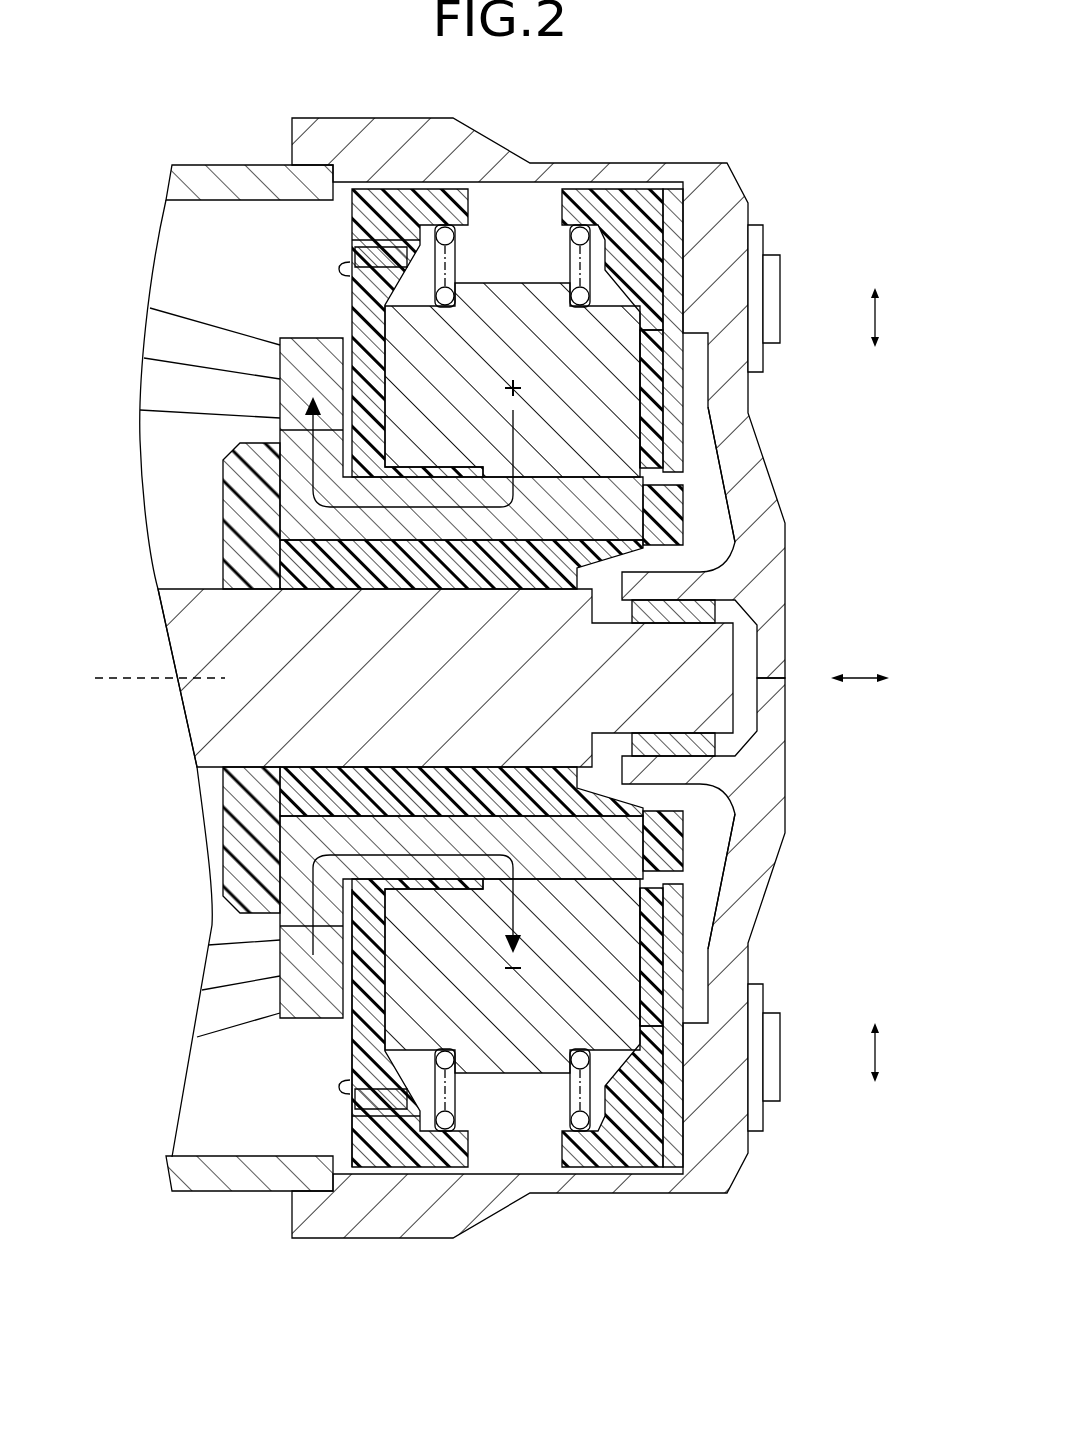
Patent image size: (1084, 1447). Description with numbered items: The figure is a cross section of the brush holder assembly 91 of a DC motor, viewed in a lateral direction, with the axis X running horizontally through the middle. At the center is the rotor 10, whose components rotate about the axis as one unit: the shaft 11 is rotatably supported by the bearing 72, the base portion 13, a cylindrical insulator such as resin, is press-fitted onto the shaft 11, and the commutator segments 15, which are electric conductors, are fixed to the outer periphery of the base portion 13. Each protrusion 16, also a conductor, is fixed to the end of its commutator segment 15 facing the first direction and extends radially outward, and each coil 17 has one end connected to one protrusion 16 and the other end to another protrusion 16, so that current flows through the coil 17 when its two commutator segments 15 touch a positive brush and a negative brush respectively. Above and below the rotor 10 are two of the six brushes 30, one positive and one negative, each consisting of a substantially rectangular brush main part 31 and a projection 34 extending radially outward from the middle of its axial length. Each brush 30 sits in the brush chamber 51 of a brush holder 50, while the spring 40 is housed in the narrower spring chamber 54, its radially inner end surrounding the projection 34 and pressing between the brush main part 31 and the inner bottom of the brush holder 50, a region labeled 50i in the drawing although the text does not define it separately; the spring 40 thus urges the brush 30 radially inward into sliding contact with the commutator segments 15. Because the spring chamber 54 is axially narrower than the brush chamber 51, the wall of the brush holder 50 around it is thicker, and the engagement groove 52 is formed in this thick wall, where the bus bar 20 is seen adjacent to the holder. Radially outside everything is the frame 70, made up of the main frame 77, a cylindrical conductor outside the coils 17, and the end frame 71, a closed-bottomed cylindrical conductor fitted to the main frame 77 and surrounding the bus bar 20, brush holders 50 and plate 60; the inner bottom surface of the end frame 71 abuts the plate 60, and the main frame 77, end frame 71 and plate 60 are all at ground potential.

The rotor 10 is at (195, 645).
The shaft 11 is at (200, 712).
The base portion 13 is at (402, 790).
The commutator segment 15 is at (470, 556).
The protrusion 16 is at (326, 348).
The coil 17 is at (160, 333).
The bus bar 20 is at (345, 268).
The brush 30 is at (648, 430).
The brush main part 31 is at (735, 500).
The projection 34 is at (520, 290).
The spring 40 is at (480, 270).
The brush holder 50 is at (617, 215).
The inner surface of heat transfer member 50i is at (348, 1043).
The brush chamber 51 is at (640, 385).
The engagement groove 52 is at (370, 270).
The spring chamber 54 is at (362, 233).
The plate 60 is at (673, 237).
The frame 70 is at (337, 1322).
The end frame 71 is at (380, 1228).
The bearing 72 is at (700, 605).
The main frame 77 is at (238, 1180).
The brush holder assembly 91 is at (816, 110).